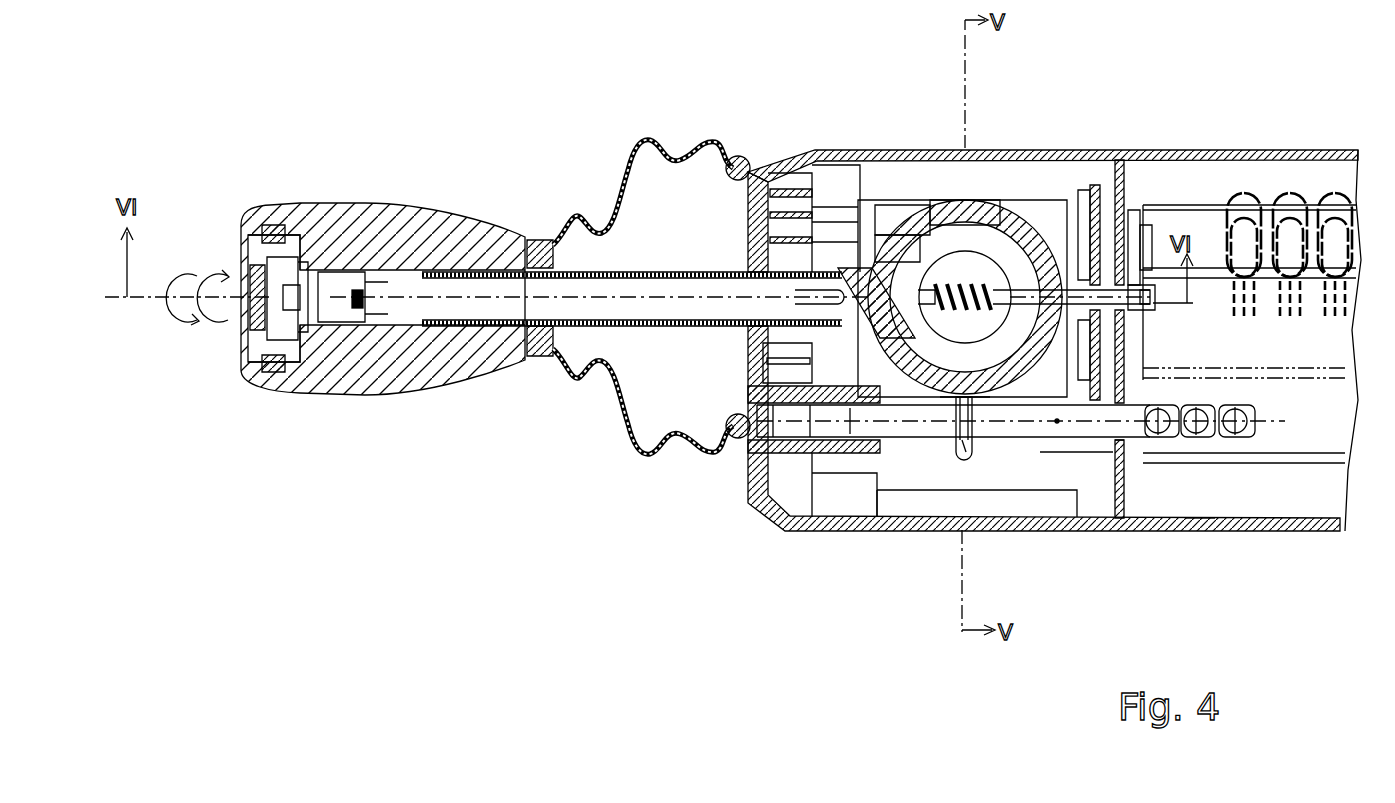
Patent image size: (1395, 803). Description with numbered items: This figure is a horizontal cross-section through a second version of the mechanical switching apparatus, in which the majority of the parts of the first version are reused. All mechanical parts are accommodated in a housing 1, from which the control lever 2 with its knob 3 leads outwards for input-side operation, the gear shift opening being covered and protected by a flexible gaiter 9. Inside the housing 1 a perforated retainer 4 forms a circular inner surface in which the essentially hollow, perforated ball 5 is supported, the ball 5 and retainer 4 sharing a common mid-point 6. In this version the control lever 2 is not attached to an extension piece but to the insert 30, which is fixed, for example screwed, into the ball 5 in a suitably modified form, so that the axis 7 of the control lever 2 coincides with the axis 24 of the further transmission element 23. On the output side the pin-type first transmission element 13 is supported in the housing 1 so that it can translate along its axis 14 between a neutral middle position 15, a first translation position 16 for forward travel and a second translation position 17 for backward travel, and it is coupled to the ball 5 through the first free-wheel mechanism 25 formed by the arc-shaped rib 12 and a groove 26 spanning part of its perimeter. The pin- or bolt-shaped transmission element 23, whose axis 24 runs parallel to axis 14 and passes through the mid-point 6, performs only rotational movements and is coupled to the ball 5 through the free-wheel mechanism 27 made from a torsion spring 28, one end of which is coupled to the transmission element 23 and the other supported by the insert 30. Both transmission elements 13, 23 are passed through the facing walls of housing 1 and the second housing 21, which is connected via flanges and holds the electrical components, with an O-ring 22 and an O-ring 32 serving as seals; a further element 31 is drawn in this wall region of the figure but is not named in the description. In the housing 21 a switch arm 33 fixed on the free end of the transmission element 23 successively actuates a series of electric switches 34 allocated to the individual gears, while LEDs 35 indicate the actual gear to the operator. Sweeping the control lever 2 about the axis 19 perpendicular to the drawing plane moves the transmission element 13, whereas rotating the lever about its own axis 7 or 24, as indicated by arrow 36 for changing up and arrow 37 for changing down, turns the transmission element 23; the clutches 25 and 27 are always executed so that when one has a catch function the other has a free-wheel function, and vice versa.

The housing 1 is at (900, 160).
The control lever 2 is at (616, 250).
The knob 3 is at (368, 230).
The retainer 4 is at (913, 240).
The ball 5 is at (892, 214).
The mid-point 6 is at (940, 222).
The axis 7 is at (497, 297).
The flexible gaiter 9 is at (632, 165).
The arc-shaped rib 12 is at (948, 425).
The first transmission element 13 is at (1073, 432).
The axis 14 is at (1057, 421).
The neutral middle position 15 is at (1214, 447).
The first translation position 16 is at (1254, 447).
The second translation position 17 is at (1176, 447).
The axis 19 is at (964, 492).
The housing 21 is at (1195, 527).
The O-ring 22 is at (1119, 445).
The further transmission element 23 is at (1022, 292).
The axis 24 is at (1142, 286).
The first free-wheel mechanism 25 is at (953, 425).
The groove 26 is at (880, 488).
The free-wheel mechanism 27 is at (979, 275).
The torsion spring 28 is at (1003, 240).
The insert 30 is at (866, 266).
The plate 31 is at (1096, 188).
The O-ring 32 is at (1120, 200).
The switch arm 33 is at (1136, 240).
The electric switches 34 is at (1148, 228).
The LEDs 35 is at (1288, 240).
The arrow 36 is at (182, 322).
The arrow 37 is at (215, 276).